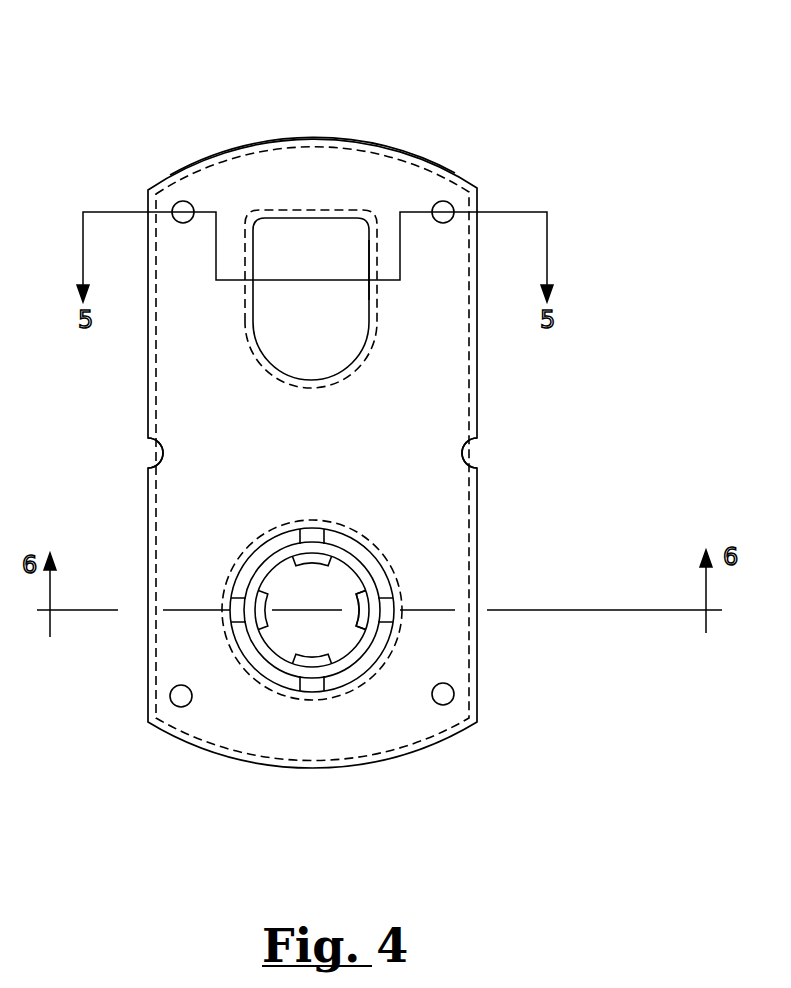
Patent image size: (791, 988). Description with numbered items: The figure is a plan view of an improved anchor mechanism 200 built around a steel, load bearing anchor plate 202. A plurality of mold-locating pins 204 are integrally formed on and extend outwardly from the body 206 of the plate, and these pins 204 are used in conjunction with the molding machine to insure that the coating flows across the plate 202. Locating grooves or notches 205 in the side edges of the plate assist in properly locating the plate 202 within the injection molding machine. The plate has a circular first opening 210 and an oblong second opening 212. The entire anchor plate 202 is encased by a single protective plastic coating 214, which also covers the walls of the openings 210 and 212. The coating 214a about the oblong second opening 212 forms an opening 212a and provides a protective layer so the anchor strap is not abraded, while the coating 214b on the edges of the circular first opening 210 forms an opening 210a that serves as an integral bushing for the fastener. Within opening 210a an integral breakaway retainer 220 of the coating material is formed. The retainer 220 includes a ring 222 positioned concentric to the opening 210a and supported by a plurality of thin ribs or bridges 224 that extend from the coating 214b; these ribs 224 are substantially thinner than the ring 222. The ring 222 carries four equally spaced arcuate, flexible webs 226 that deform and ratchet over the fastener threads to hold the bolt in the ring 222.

The anchor mechanism 200 is at (508, 179).
The anchor plate 202 is at (200, 391).
The mold-locating pins 204 is at (183, 201).
The locating grooves or notches 205 is at (163, 453).
The body 206 is at (413, 490).
The first opening 210 is at (394, 645).
The opening 210a is at (274, 545).
The second opening 212 is at (310, 388).
The opening 212a is at (315, 218).
The protective plastic coating 214 is at (302, 140).
The coating about opening 212 214a is at (370, 257).
The coating about opening 210 214b is at (352, 583).
The integral retainer 220 is at (258, 667).
The ring 222 is at (333, 663).
The ribs or bridges 224 is at (316, 528).
The arcuate, flexible webs 226 is at (314, 571).